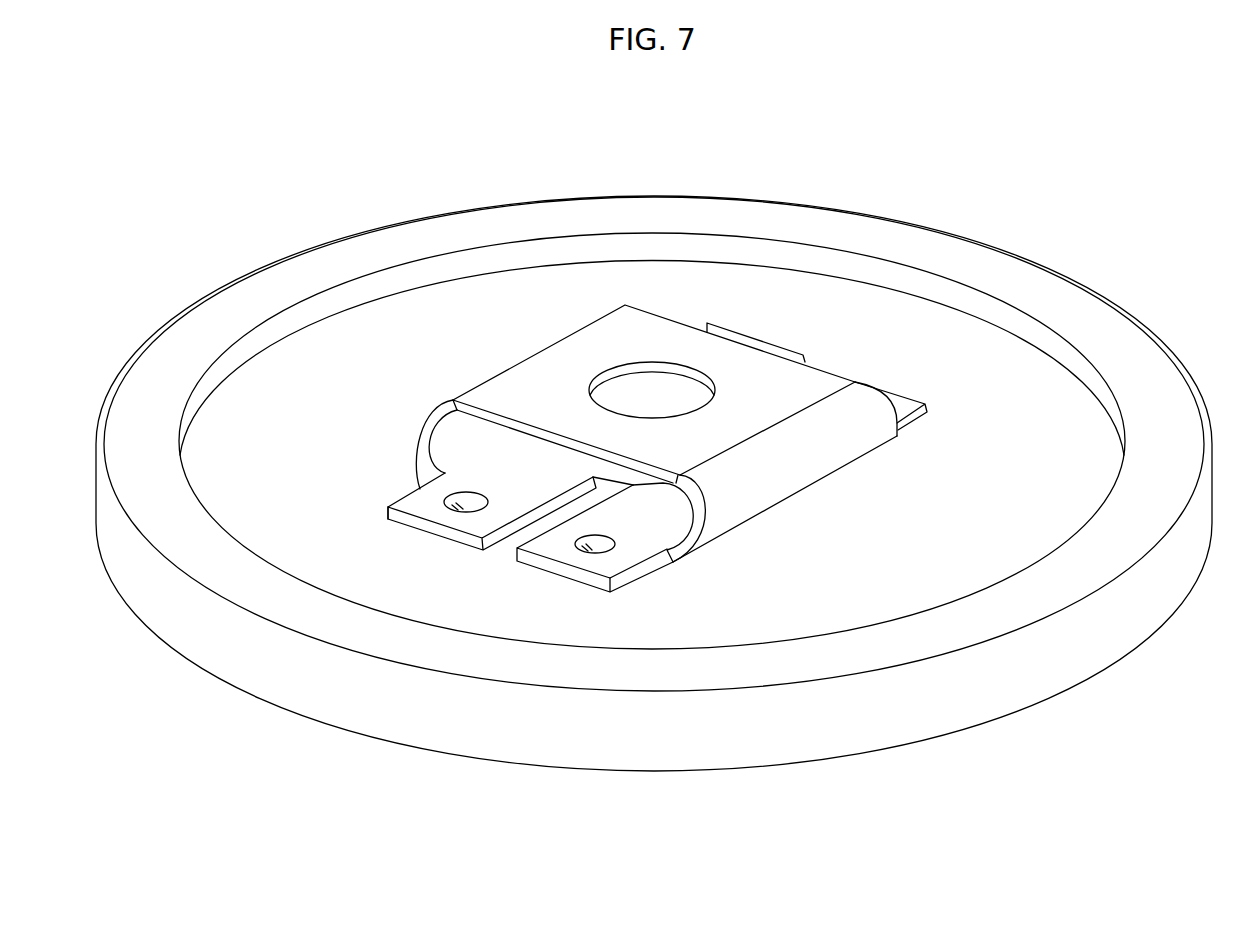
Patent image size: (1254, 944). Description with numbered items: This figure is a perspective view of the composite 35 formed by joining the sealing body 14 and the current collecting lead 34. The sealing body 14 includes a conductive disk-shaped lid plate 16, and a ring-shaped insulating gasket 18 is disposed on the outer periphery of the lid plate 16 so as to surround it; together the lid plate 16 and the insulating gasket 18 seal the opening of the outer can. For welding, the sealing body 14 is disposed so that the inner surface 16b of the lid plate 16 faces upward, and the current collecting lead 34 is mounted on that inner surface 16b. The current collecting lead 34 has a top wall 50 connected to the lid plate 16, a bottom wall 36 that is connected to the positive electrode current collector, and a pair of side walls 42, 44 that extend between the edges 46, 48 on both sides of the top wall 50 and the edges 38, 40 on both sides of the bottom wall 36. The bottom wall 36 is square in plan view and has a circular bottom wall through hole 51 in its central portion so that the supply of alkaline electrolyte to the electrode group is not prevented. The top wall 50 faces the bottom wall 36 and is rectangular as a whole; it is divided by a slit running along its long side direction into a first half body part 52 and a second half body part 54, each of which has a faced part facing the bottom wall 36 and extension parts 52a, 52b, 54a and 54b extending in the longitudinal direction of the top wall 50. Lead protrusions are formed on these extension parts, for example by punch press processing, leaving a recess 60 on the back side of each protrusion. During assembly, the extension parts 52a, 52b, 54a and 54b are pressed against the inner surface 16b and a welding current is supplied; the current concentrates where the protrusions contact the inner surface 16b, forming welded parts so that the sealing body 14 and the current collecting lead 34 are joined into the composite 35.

The composite 35 is at (392, 182).
The sealing body 14 is at (1003, 248).
The insulating gasket 18 is at (1078, 316).
The lid plate 16 is at (382, 343).
The inner surface 16b is at (313, 375).
The current collecting lead 34 is at (908, 497).
The bottom wall 36 is at (577, 342).
The bottom wall through hole 51 is at (690, 368).
The edge 38 is at (523, 353).
The side wall 42 is at (420, 437).
The edge 46 is at (427, 478).
The edge 40 is at (763, 443).
The side wall 44 is at (815, 467).
The edge 48 is at (743, 523).
The top wall 50 is at (512, 600).
The second half body part 54 is at (447, 530).
The first half body part 52 is at (518, 560).
The extension part 52a is at (642, 553).
The extension part 54a is at (413, 500).
The recess 60 is at (460, 496).
The extension part 54b is at (777, 345).
The extension part 52b is at (900, 398).